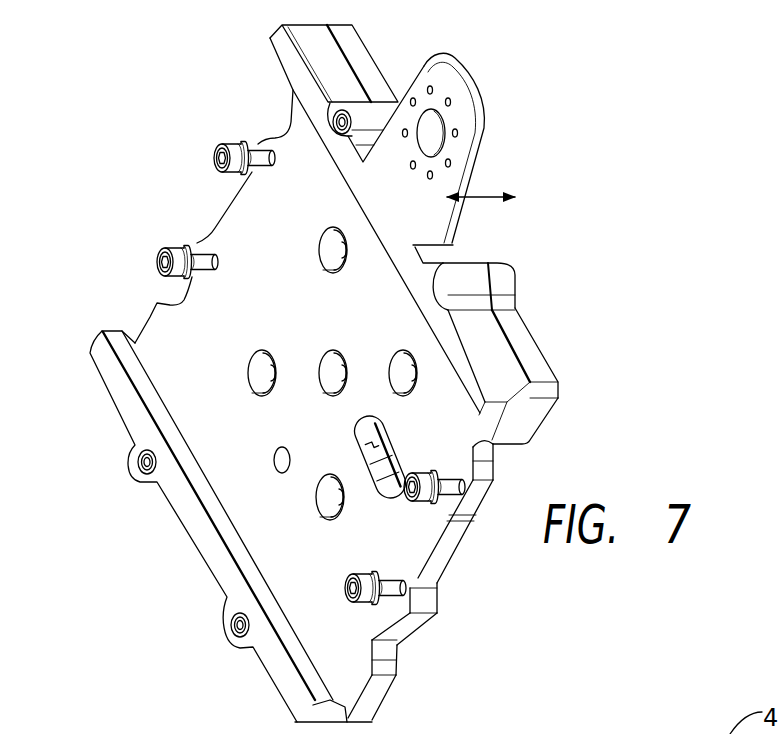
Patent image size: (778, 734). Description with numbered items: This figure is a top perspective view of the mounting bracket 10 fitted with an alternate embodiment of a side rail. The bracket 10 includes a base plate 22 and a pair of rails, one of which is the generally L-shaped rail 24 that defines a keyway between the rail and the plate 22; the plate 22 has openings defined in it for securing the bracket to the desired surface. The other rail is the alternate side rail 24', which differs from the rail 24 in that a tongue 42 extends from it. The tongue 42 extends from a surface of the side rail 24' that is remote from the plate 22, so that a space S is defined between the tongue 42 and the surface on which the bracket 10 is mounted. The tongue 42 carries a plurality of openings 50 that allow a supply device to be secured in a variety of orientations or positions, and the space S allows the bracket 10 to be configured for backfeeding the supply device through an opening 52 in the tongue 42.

The bracket 10 is at (128, 148).
The base plate 22 is at (282, 528).
The rail 24 is at (203, 526).
The side rail 24' is at (295, 85).
The tongue 42 is at (492, 73).
The openings 50 is at (448, 98).
The opening 52 is at (436, 138).
The space S is at (483, 199).